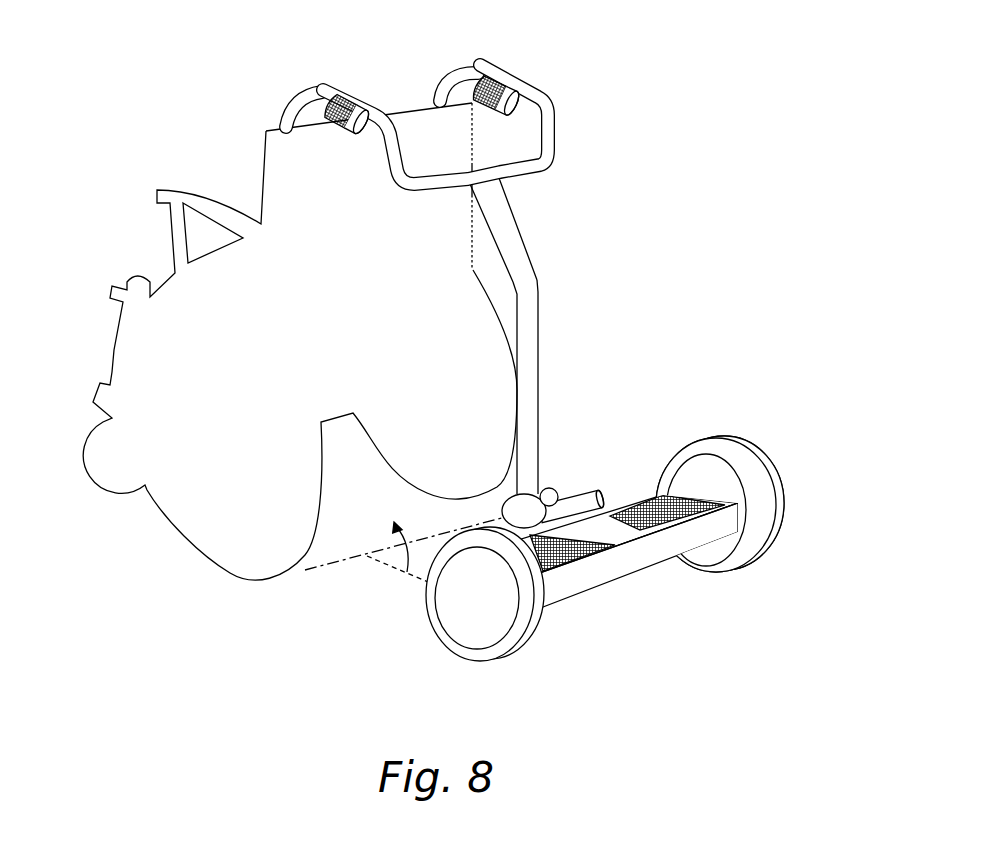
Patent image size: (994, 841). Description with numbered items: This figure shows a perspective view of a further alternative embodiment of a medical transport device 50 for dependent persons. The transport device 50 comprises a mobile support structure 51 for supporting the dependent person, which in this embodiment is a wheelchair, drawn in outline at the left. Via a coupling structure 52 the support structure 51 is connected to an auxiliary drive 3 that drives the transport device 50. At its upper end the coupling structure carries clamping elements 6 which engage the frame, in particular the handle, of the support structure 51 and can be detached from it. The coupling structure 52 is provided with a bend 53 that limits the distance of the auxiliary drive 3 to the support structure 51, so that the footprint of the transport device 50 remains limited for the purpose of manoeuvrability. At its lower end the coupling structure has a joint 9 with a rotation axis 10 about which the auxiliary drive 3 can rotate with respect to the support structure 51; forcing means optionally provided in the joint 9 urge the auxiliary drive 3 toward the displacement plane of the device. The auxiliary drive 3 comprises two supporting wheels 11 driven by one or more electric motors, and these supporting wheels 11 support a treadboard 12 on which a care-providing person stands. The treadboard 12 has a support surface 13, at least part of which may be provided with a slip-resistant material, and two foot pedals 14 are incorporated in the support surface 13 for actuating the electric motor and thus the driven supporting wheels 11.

The auxiliary drive 3 is at (773, 460).
The clamping elements 6 is at (344, 107).
The joint 9 is at (548, 492).
The rotation axis 10 is at (322, 570).
The supporting wheels 11 is at (702, 470).
The treadboard 12 is at (611, 544).
The support surface 13 is at (612, 520).
The foot pedals 14 is at (690, 518).
The medical transport device 50 is at (667, 113).
The mobile support structure 51 is at (106, 200).
The coupling structure 52 is at (539, 383).
The bend 53 is at (539, 288).